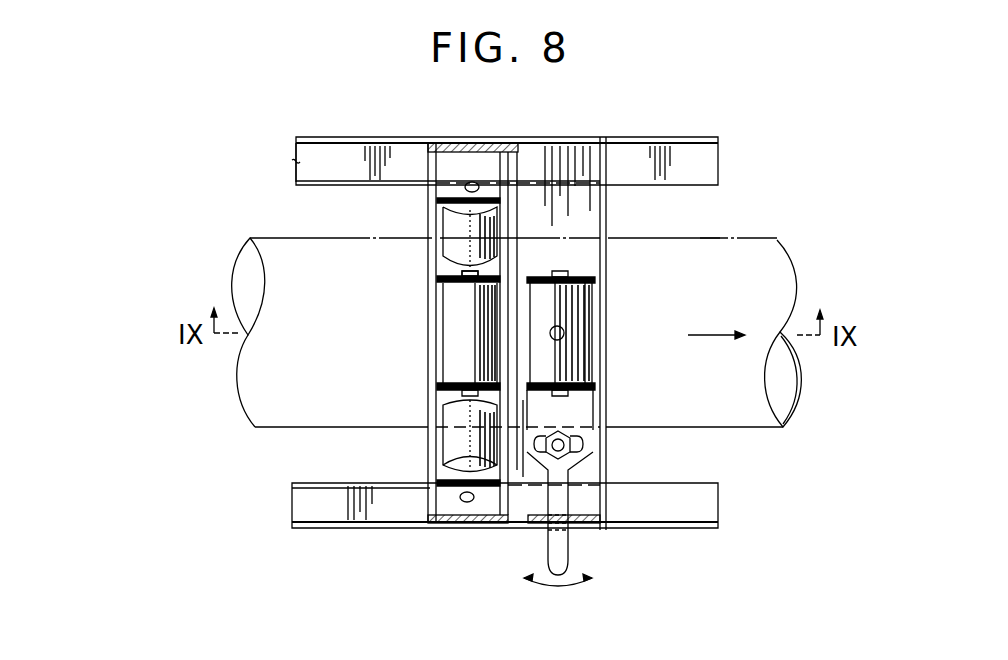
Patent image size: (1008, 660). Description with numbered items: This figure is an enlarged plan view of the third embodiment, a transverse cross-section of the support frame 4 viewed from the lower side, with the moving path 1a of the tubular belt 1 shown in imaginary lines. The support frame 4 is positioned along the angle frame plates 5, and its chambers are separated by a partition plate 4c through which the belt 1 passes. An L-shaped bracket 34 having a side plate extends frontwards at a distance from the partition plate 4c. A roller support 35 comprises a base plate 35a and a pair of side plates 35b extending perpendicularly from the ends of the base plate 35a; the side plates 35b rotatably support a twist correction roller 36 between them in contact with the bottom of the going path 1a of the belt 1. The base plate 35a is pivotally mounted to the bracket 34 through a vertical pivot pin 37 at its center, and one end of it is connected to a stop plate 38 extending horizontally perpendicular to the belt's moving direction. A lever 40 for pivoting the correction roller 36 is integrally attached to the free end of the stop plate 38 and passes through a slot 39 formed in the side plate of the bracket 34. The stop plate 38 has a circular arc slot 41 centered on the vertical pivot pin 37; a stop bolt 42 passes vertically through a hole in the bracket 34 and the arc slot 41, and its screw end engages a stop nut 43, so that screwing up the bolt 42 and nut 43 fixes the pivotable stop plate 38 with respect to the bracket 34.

The tubular belt 1 is at (749, 239).
The moving path 1a is at (707, 238).
The support frame 4 is at (428, 395).
The partition plate 4c is at (437, 266).
The angle frame plates 5 is at (298, 168).
The L-shaped bracket 34 is at (604, 206).
The roller support 35 is at (597, 296).
The base plate 35a is at (598, 332).
The side plates 35b is at (597, 273).
The twist correction roller 36 is at (598, 360).
The vertical pivot pin 37 is at (566, 330).
The stop plate 38 is at (603, 410).
The slot 39 is at (576, 540).
The lever 40 is at (548, 552).
The circular arc slot 41 is at (543, 449).
The stop bolt 42 is at (598, 440).
The stop nut 43 is at (595, 456).